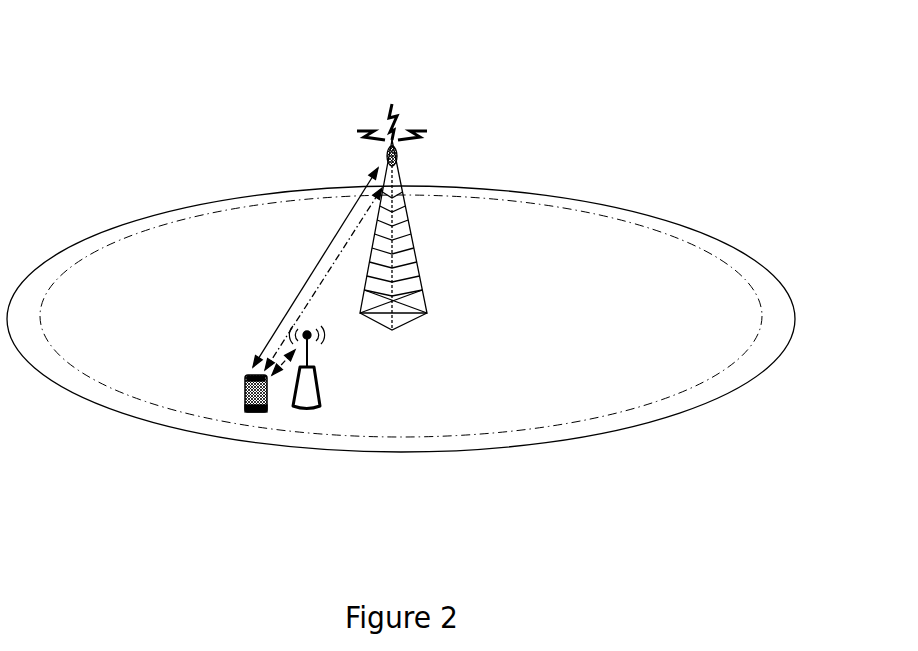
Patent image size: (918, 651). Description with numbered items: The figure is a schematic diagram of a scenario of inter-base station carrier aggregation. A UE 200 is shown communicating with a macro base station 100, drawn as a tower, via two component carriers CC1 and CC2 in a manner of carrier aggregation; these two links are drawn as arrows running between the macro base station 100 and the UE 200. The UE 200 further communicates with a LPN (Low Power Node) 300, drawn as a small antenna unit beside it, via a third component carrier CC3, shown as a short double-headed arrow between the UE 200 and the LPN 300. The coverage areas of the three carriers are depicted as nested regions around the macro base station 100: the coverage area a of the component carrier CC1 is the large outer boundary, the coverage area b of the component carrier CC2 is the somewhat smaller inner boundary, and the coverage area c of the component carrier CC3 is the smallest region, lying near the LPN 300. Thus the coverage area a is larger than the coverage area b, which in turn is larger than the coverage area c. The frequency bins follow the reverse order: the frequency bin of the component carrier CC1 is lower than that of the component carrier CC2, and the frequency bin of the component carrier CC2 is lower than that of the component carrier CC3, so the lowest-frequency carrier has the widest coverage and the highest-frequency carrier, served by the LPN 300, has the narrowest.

The macro base station 100 is at (397, 165).
The UE 200 is at (242, 395).
The LPN (Low Power Node) 300 is at (311, 383).
The coverage area of component carrier CC1 a is at (401, 319).
The coverage area of component carrier CC2 b is at (401, 316).
The coverage area of component carrier CC3 c is at (401, 363).
The component carrier CC1 is at (310, 267).
The component carrier CC2 is at (323, 279).
The component carrier CC3 is at (285, 366).